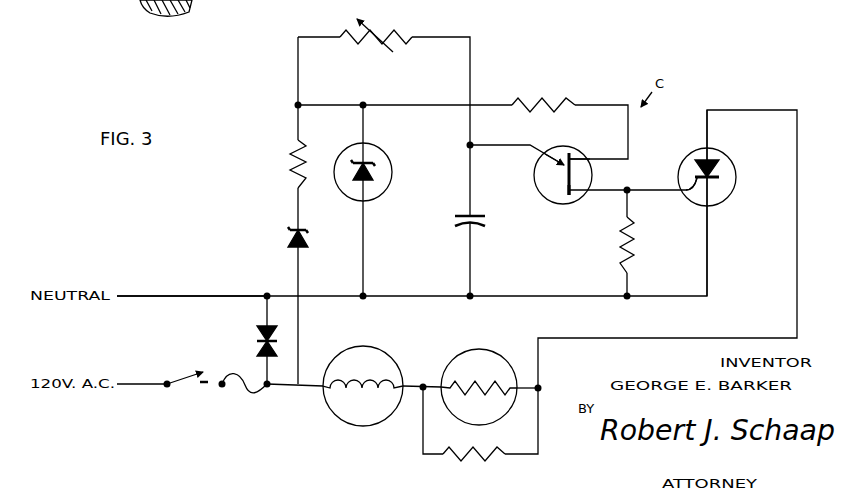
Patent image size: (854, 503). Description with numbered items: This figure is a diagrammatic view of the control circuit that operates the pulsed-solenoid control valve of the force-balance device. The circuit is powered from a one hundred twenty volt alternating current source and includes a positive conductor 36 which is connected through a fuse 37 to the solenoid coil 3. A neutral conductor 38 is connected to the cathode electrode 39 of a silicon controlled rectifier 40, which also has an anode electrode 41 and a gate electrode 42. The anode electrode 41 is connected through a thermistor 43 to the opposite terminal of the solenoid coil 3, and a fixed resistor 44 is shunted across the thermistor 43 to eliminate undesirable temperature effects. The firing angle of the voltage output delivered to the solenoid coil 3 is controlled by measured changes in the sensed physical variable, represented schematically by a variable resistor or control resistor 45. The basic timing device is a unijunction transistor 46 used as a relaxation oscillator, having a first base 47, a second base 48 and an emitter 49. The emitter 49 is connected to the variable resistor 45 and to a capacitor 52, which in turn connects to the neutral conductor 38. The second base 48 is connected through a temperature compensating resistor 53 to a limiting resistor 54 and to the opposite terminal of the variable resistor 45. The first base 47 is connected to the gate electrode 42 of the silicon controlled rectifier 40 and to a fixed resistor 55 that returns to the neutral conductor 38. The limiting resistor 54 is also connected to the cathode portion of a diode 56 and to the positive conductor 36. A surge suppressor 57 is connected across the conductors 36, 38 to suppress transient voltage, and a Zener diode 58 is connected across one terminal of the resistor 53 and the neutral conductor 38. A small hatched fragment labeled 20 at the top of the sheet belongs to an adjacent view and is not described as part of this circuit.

The solenoid coil 3 is at (386, 353).
The valve body portion 20 is at (176, 13).
The positive conductor 36 is at (144, 384).
The fuse 37 is at (250, 389).
The neutral conductor 38 is at (180, 293).
The cathode electrode 39 is at (736, 190).
The silicon controlled rectifier 40 is at (708, 173).
The anode electrode 41 is at (698, 160).
The gate electrode 42 is at (690, 193).
The thermistor 43 is at (466, 352).
The fixed resistor 44 is at (448, 458).
The variable resistor 45 is at (405, 33).
The unijunction transistor 46 is at (534, 170).
The base-1 47 is at (568, 185).
The base-2 48 is at (587, 157).
The emitter 49 is at (563, 158).
The capacitor 52 is at (486, 226).
The temperature compensating resistor 53 is at (524, 97).
The limiting resistor 54 is at (293, 176).
The fixed resistor 55 is at (620, 243).
The diode 56 is at (290, 240).
The surge suppressor 57 is at (258, 347).
The Zener diode 58 is at (392, 173).